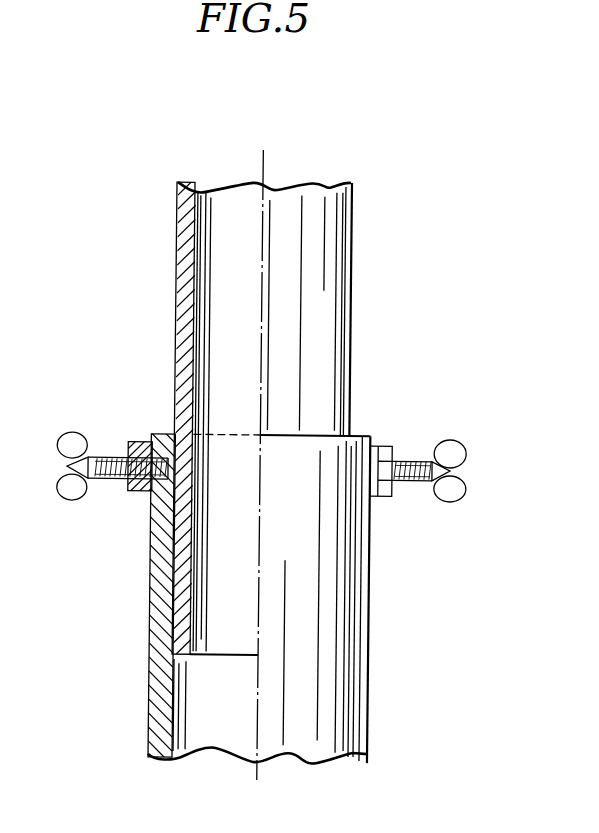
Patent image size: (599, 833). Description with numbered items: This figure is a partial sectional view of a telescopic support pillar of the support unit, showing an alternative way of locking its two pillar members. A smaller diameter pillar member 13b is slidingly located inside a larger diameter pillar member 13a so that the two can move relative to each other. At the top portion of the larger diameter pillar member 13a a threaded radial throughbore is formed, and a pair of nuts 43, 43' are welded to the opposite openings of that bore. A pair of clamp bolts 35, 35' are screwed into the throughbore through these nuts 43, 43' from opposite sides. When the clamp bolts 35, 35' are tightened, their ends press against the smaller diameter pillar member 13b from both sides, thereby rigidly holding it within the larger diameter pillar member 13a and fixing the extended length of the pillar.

The larger diameter pillar member 13a is at (340, 619).
The smaller diameter pillar member 13b is at (316, 326).
The clamp bolt 35 is at (113, 425).
The clamp bolt 35' is at (449, 441).
The nut 43 is at (140, 441).
The nut 43' is at (404, 434).